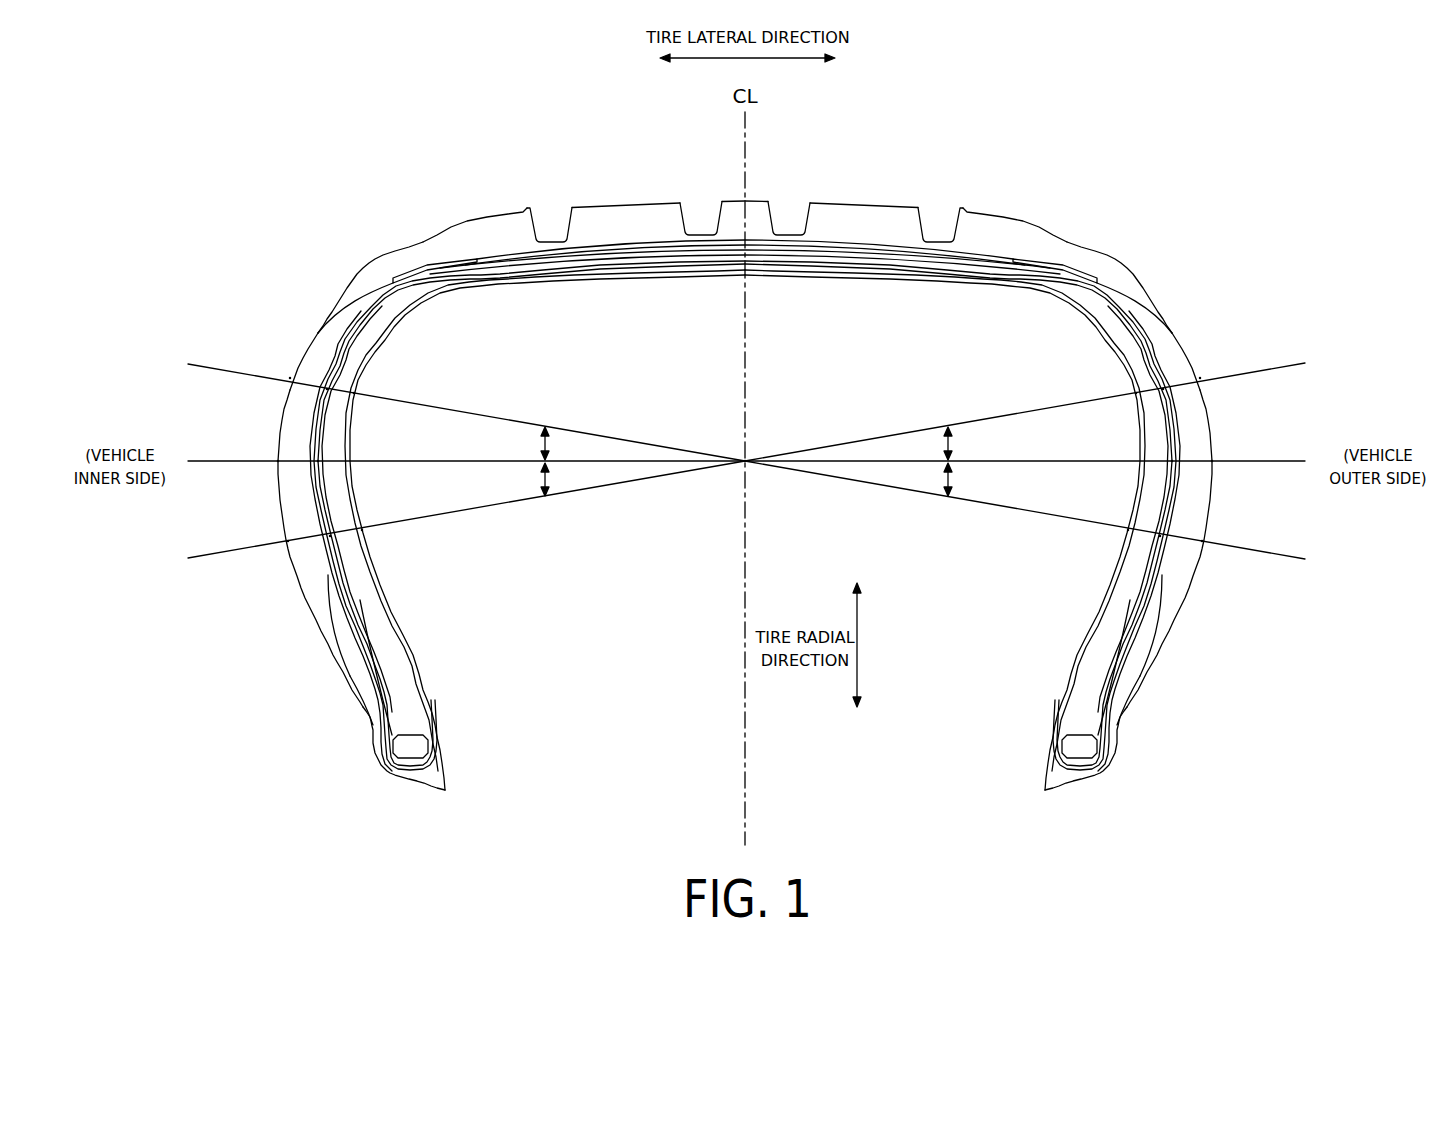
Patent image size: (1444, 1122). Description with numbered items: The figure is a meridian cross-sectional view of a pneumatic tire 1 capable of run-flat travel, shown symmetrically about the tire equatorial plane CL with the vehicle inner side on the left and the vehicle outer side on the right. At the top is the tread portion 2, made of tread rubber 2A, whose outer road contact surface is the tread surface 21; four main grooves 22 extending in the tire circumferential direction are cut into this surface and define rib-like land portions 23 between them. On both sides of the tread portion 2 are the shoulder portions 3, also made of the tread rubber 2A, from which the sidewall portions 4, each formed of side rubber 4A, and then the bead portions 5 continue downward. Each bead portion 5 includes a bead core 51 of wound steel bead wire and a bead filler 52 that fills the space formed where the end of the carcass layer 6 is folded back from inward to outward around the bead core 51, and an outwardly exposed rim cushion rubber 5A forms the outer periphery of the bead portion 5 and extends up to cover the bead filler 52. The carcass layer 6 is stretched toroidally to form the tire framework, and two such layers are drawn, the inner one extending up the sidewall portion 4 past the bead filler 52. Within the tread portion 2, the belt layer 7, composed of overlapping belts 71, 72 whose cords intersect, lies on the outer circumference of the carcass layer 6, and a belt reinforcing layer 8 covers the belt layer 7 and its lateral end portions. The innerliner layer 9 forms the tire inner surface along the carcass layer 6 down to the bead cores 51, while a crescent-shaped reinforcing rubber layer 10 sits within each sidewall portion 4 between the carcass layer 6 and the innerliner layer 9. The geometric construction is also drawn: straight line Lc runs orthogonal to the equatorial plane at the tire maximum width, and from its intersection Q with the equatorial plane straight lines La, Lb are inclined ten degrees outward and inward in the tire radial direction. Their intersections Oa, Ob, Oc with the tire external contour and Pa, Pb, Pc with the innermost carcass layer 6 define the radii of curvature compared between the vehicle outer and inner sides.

The pneumatic tire 1 is at (1090, 124).
The tread portion 2 is at (745, 189).
The tread surface 21 is at (910, 205).
The main grooves 22 is at (549, 230).
The land portions 23 is at (482, 226).
The tread rubber 2A is at (975, 221).
The shoulder portions 3 is at (358, 266).
The sidewall portions 4 is at (278, 418).
The side rubber 4A is at (305, 363).
The bead portions 5 is at (364, 743).
The rim cushion rubber 5A is at (352, 679).
The bead core 51 is at (416, 747).
The bead filler 52 is at (396, 680).
The carcass layer 6 is at (1140, 344).
The belt layer 7 is at (918, 343).
The belt 71 is at (985, 268).
The belt 72 is at (940, 262).
The belt reinforcing layer 8 is at (418, 267).
The innerliner layer 9 is at (1082, 310).
The reinforcing rubber layer 10 is at (326, 582).
The intersection Q is at (744, 460).
The straight line La is at (238, 372).
The straight line Lb is at (240, 549).
The straight line Lc is at (232, 461).
The intersection Oa is at (290, 378).
The intersection Ob is at (288, 541).
The intersection Oc is at (278, 461).
The intersection Pa is at (330, 392).
The intersection Pb is at (335, 536).
The intersection Pc is at (320, 463).
The inner liner point on La Ia is at (356, 393).
The inner liner point on Lb Ib is at (363, 530).